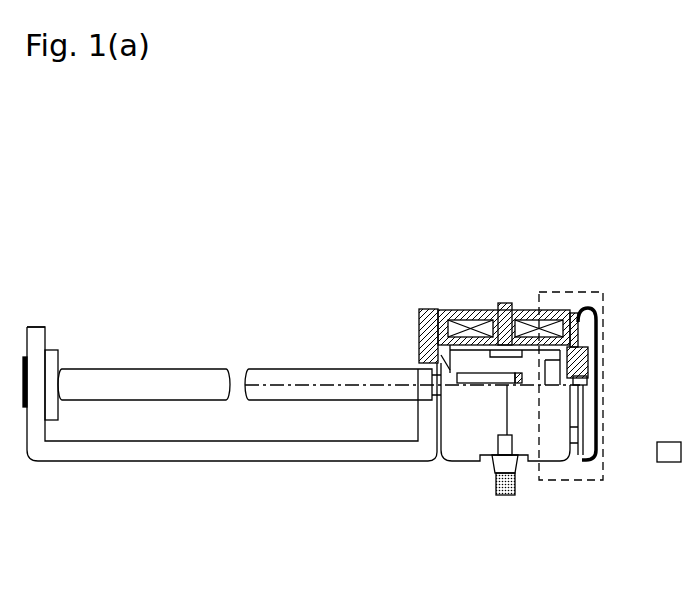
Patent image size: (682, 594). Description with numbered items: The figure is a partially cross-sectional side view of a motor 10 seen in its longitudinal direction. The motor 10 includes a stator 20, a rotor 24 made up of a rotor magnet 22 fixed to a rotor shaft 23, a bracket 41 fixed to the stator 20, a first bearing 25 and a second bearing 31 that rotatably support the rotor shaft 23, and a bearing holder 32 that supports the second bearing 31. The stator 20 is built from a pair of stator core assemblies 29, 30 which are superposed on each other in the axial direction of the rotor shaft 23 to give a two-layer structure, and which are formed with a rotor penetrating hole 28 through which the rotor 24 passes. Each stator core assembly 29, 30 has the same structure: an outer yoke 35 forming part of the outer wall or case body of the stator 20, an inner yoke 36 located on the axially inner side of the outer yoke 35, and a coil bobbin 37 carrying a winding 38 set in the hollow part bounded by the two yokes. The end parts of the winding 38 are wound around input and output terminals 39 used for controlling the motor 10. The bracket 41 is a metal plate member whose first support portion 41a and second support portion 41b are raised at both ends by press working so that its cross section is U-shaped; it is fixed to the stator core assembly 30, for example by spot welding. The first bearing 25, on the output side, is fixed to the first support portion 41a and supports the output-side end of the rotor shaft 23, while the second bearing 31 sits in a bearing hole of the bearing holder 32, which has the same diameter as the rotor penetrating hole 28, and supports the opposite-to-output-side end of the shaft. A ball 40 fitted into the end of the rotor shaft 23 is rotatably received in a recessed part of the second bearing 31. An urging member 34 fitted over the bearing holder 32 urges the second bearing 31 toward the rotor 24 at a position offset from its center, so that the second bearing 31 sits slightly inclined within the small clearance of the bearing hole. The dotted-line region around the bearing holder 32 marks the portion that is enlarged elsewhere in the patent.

The motor 10 is at (118, 190).
The stator 20 is at (478, 245).
The rotor magnet 22 is at (467, 370).
The rotor shaft 23 is at (327, 377).
The rotor 24 is at (273, 310).
The first bearing 25 is at (52, 358).
The rotor penetrating hole 28 is at (418, 335).
The stator core assembly 29 is at (548, 287).
The stator core assembly 30 is at (460, 303).
The second bearing 31 is at (593, 348).
The bearing holder 32 is at (595, 320).
The urging member 34 is at (592, 442).
The outer yoke 35 is at (565, 310).
The inner yoke 36 is at (505, 303).
The coil bobbin 37 is at (575, 313).
The winding 38 is at (553, 310).
The input and output terminals 39 is at (500, 497).
The ball 40 is at (592, 376).
The bracket 41 is at (310, 470).
The first support portion 41a is at (35, 337).
The second support portion 41b is at (433, 312).